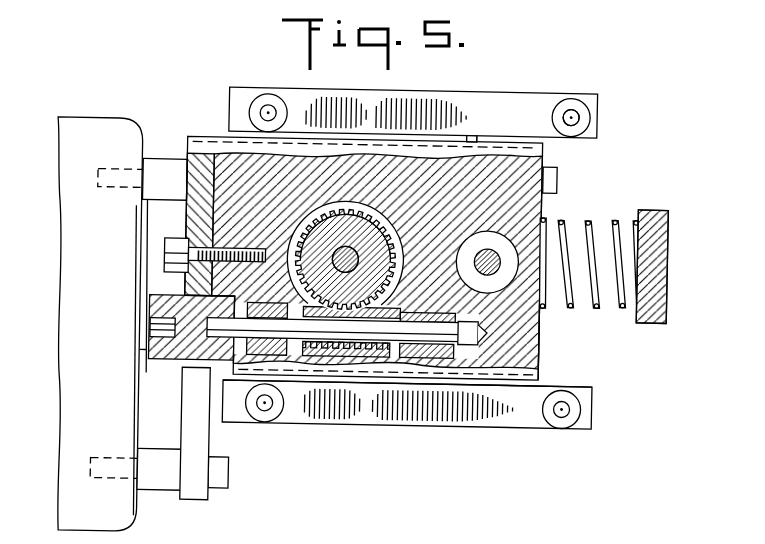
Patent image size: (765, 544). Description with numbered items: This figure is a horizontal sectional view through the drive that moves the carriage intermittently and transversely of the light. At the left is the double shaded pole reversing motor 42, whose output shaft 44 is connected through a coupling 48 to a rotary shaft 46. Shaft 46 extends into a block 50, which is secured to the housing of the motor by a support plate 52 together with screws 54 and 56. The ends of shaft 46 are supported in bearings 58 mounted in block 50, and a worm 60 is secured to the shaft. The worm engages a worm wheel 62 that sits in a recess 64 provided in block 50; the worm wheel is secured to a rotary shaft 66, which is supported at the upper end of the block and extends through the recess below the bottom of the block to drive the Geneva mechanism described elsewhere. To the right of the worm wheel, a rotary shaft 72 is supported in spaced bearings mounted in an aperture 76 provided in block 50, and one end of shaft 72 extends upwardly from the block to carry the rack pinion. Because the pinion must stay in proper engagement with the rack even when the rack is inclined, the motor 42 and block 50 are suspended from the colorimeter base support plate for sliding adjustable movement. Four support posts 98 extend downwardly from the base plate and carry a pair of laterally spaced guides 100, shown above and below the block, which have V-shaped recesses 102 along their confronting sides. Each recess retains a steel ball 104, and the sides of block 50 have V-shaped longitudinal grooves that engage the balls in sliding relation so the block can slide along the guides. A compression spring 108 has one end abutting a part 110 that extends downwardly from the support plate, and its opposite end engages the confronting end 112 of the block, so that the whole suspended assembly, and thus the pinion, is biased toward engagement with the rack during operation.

The double shaded pole reversing motor 42 is at (80, 331).
The output shaft 44 is at (157, 336).
The rotary shaft 46 is at (381, 353).
The coupling 48 is at (174, 366).
The block 50 is at (544, 339).
The support plate 52 is at (196, 504).
The screw 54 is at (171, 242).
The screw 56 is at (558, 177).
The bearings 58 is at (282, 357).
The worm 60 is at (339, 363).
The worm wheel 62 is at (374, 215).
The recess 64 is at (391, 215).
The rotary shaft 66 is at (340, 251).
The rotary shaft 72 is at (488, 253).
The aperture 76 is at (498, 281).
The support posts 98 is at (577, 112).
The guides 100 is at (528, 88).
The V-shaped recesses 102 is at (585, 389).
The steel ball 104 is at (465, 132).
The compression spring 108 is at (599, 306).
The part 110 is at (656, 318).
The confronting end 112 is at (541, 354).